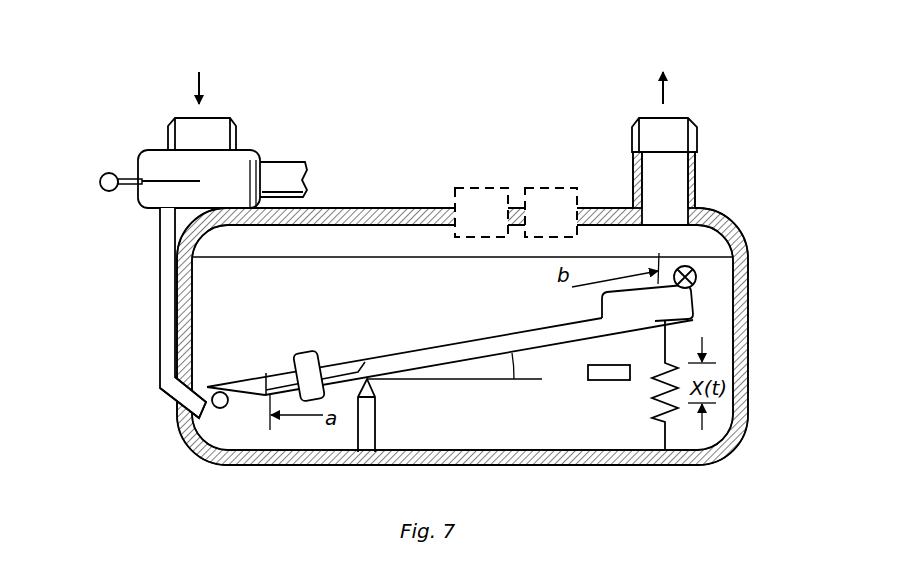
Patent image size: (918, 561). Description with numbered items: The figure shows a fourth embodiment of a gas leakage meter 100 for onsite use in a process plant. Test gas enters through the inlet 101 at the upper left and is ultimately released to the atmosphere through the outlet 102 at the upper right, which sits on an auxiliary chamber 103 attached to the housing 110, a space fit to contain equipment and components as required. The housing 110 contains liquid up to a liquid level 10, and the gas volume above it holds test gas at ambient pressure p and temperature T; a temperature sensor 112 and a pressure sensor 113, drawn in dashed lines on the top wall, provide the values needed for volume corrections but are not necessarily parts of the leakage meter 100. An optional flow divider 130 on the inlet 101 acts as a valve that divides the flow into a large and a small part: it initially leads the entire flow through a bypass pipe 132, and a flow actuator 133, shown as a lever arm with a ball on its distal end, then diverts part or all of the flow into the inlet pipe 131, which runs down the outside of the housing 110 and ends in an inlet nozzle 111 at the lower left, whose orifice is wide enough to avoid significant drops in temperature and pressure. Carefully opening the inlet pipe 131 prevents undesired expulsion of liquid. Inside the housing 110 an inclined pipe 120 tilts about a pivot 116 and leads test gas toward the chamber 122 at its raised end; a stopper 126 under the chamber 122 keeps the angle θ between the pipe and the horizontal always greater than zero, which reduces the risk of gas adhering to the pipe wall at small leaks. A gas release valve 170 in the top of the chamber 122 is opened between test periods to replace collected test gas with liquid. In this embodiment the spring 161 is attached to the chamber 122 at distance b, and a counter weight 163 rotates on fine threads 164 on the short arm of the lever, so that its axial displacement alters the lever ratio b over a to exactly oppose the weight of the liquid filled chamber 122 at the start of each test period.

The leakage meter 100 is at (358, 75).
The inlet 101 is at (188, 123).
The outlet 102 is at (675, 127).
The auxiliary chamber 103 is at (678, 181).
The housing 110 is at (338, 208).
The inlet nozzle 111 is at (172, 397).
The temperature sensor 112 is at (475, 190).
The pressure sensor 113 is at (553, 194).
The pivot 116 is at (373, 380).
The inclined pipe 120 is at (418, 355).
The chamber 122 is at (660, 323).
The stopper 126 is at (613, 380).
The flow divider 130 is at (153, 158).
The inlet pipe 131 is at (160, 292).
The bypass pipe 132 is at (283, 172).
The flow actuator 133 is at (130, 184).
The spring 161 is at (648, 393).
The counter weight 163 is at (305, 352).
The fine threads 164 is at (283, 370).
The gas release valve 170 is at (680, 264).
The liquid level 10 is at (457, 259).